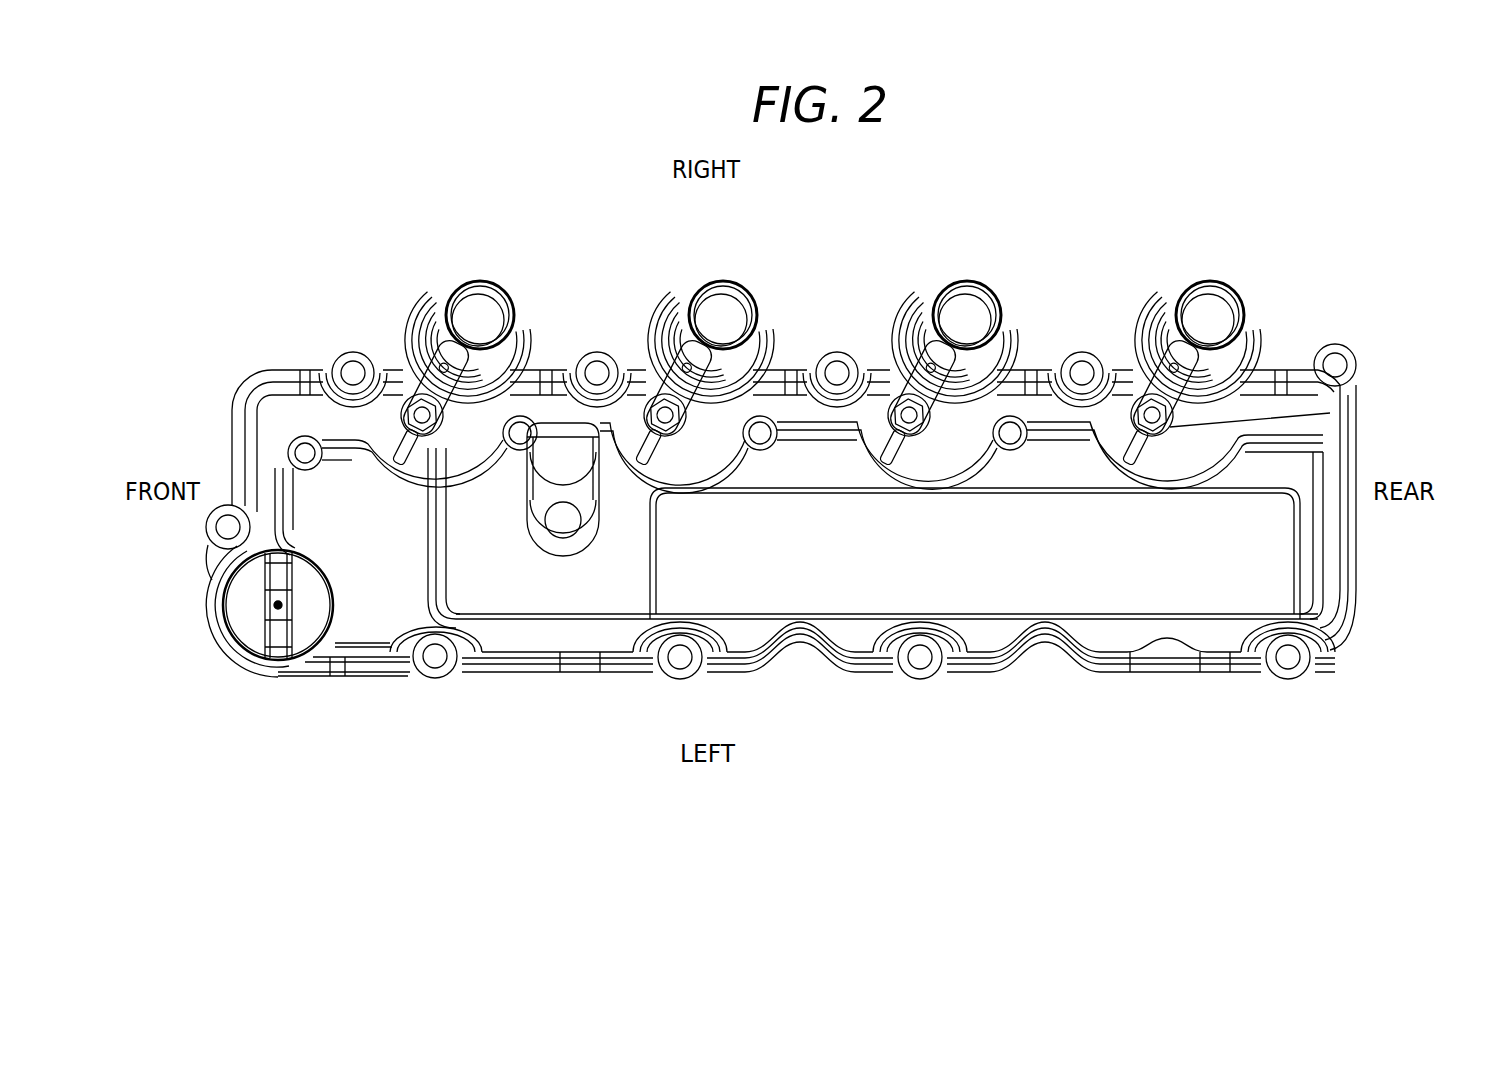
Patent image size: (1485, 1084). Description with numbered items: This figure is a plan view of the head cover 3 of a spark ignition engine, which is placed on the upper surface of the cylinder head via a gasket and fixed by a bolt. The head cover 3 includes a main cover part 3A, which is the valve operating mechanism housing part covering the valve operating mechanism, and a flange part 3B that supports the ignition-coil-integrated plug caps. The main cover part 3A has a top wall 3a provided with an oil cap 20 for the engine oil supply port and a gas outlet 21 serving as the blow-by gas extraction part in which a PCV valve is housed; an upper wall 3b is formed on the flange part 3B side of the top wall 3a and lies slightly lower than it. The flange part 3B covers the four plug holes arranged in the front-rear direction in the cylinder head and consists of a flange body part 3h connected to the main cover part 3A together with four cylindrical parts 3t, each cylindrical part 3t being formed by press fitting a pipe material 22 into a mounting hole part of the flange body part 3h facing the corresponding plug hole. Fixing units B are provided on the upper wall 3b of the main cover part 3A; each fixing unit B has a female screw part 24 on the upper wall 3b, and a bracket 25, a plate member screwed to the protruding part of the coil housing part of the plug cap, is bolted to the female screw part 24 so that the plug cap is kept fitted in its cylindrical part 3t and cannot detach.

The head cover 3 is at (243, 370).
The main cover part 3A is at (1352, 598).
The flange part 3B is at (410, 320).
The top wall 3a is at (1124, 597).
The upper wall 3b is at (457, 457).
The flange body part 3h is at (1172, 318).
The cylindrical part 3t is at (887, 274).
The oil cap 20 is at (245, 625).
The gas outlet 21 is at (552, 465).
The pipe material 22 is at (1231, 289).
The female screw part 24 is at (400, 420).
The bracket 25 is at (1340, 412).
The fixing unit B is at (920, 377).